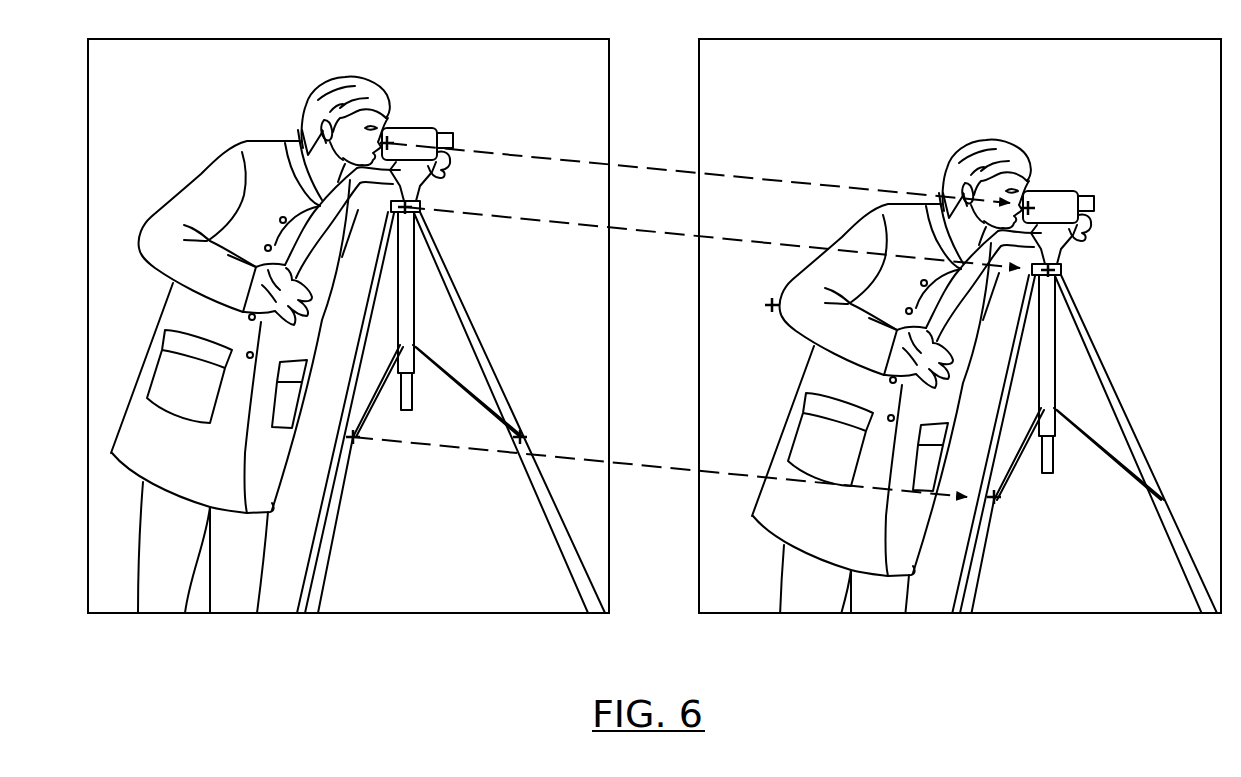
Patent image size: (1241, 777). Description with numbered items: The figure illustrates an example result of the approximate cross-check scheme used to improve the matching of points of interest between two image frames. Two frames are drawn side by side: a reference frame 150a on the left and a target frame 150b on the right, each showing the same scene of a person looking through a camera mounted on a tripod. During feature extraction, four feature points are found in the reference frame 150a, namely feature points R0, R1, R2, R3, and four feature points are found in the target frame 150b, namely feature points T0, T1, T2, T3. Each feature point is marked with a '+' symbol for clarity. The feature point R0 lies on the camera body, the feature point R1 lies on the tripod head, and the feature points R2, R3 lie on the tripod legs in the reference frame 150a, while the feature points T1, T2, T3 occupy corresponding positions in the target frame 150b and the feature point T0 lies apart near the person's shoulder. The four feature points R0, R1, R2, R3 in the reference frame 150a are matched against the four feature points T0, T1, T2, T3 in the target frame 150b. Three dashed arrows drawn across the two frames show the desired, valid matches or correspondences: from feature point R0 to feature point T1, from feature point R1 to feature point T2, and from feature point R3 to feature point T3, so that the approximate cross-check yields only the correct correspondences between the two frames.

The reference frame 150a is at (152, 38).
The target frame 150b is at (764, 38).
The feature point R0 is at (404, 124).
The feature point R1 is at (437, 201).
The feature point R2 is at (538, 433).
The feature point R3 is at (368, 452).
The feature point T0 is at (755, 306).
The feature point T1 is at (1043, 189).
The feature point T2 is at (1077, 273).
The feature point T3 is at (1010, 505).